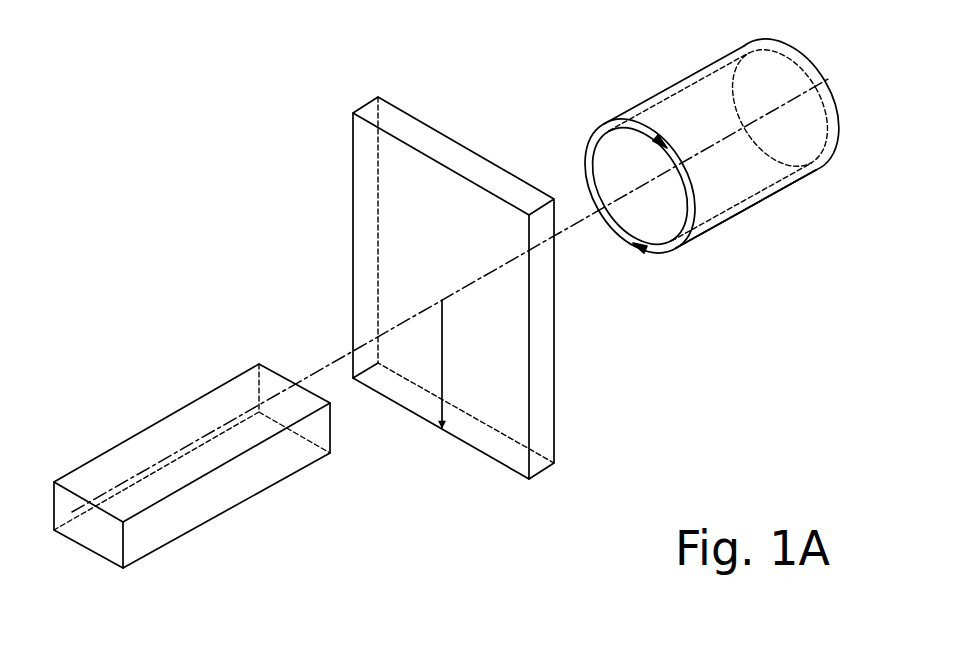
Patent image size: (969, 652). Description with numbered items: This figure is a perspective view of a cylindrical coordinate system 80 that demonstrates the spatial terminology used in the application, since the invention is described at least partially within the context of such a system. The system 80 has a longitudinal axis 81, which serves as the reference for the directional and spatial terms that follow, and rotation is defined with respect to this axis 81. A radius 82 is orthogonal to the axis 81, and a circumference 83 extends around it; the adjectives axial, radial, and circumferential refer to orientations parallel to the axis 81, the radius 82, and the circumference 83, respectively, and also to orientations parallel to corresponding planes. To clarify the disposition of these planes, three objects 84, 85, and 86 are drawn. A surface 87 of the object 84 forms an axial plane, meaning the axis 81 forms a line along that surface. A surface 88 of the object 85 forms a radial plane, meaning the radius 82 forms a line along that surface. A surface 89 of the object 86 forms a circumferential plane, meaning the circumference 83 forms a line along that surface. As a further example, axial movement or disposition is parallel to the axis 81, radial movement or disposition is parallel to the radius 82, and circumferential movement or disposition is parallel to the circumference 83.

The cylindrical coordinate system 80 is at (307, 160).
The longitudinal axis 81 is at (820, 80).
The radius 82 is at (442, 358).
The circumference 83 is at (585, 146).
The object 84 is at (152, 553).
The object 85 is at (565, 472).
The object 86 is at (740, 225).
The surface 87 is at (146, 447).
The surface 88 is at (367, 243).
The surface 89 is at (672, 80).